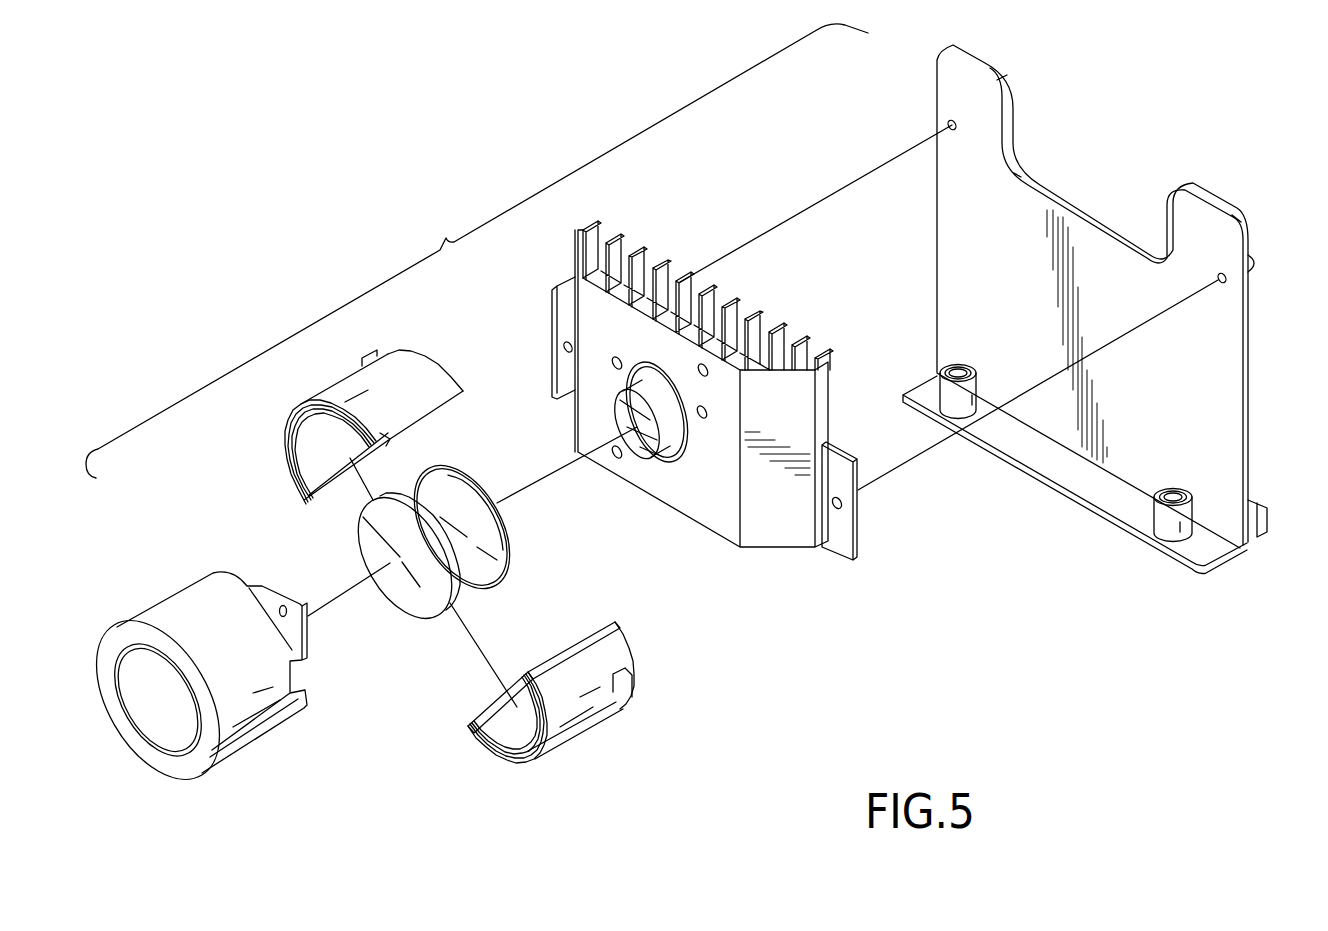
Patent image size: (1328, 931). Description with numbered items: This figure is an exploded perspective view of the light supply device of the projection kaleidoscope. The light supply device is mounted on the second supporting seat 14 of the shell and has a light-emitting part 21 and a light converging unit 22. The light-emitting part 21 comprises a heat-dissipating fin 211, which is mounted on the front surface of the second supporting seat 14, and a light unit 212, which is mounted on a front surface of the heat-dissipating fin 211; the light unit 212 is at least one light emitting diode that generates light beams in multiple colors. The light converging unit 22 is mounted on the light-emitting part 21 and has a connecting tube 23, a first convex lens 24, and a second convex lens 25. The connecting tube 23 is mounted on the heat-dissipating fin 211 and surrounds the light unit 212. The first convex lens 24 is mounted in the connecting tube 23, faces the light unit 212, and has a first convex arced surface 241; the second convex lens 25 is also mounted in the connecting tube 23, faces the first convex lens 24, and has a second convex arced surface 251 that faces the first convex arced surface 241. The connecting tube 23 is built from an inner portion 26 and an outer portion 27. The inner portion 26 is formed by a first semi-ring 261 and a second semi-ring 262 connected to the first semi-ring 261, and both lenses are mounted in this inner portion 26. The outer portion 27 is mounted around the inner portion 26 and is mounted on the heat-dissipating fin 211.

The second supporting seat 14 is at (1249, 380).
The light-emitting part 21 is at (758, 572).
The heat-dissipating fin 211 is at (795, 535).
The light unit 212 is at (650, 448).
The light converging unit 22 is at (235, 490).
The connecting tube 23 is at (185, 792).
The first convex lens 24 is at (507, 540).
The first convex arced surface 241 is at (437, 490).
The second convex lens 25 is at (413, 600).
The second convex arced surface 251 is at (453, 540).
The inner portion 26 is at (510, 782).
The first semi-ring 261 is at (415, 370).
The second semi-ring 262 is at (590, 720).
The outer portion 27 is at (257, 722).